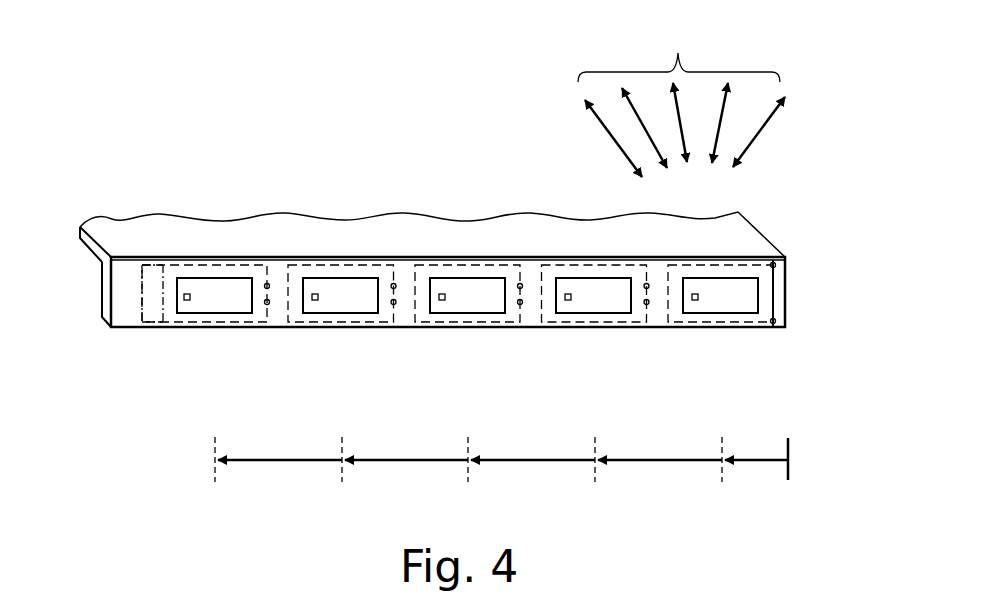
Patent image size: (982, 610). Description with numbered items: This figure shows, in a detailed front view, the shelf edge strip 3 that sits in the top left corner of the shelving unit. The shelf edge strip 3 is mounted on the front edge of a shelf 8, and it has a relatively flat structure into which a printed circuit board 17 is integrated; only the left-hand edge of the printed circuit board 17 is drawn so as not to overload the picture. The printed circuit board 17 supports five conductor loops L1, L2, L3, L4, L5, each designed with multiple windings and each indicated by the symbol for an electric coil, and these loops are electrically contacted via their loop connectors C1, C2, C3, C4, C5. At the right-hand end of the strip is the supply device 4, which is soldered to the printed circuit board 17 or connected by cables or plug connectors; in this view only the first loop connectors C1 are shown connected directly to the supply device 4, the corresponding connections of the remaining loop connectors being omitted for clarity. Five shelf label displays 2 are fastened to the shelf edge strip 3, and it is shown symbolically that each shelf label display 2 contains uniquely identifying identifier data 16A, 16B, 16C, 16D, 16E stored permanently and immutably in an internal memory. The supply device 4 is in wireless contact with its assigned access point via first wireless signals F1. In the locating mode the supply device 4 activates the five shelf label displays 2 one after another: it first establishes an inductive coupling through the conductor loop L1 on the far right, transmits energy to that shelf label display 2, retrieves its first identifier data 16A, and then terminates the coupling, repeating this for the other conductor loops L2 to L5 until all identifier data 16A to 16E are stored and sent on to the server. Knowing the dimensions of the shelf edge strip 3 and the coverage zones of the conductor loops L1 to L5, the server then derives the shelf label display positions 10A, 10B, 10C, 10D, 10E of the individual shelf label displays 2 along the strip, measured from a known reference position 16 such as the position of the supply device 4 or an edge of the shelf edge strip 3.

The shelf label display 2 is at (207, 308).
The shelf edge strip 3 is at (98, 297).
The supply device 4 is at (777, 292).
The shelf 8 is at (88, 246).
The reference position 16 is at (788, 442).
The printed circuit board 17 is at (141, 293).
The first identifier data 16A is at (696, 293).
The second identifier data 16B is at (569, 293).
The third identifier data 16C is at (443, 293).
The fourth identifier data 16D is at (316, 293).
The fifth identifier data 16E is at (186, 293).
The first loop connector C1 is at (773, 262).
The second loop connector C2 is at (647, 283).
The third loop connector C3 is at (521, 283).
The fourth loop connector C4 is at (394, 283).
The fifth loop connector C5 is at (268, 283).
The first conductor loop L1 is at (725, 327).
The second conductor loop L2 is at (598, 327).
The third conductor loop L3 is at (458, 327).
The fourth conductor loop L4 is at (332, 327).
The fifth conductor loop L5 is at (207, 327).
The first shelf label display position 10A is at (728, 468).
The second shelf label display position 10B is at (603, 468).
The third shelf label display position 10C is at (477, 468).
The fourth shelf label display position 10D is at (352, 468).
The fifth shelf label display position 10E is at (228, 468).
The first wireless signals F1 is at (681, 96).